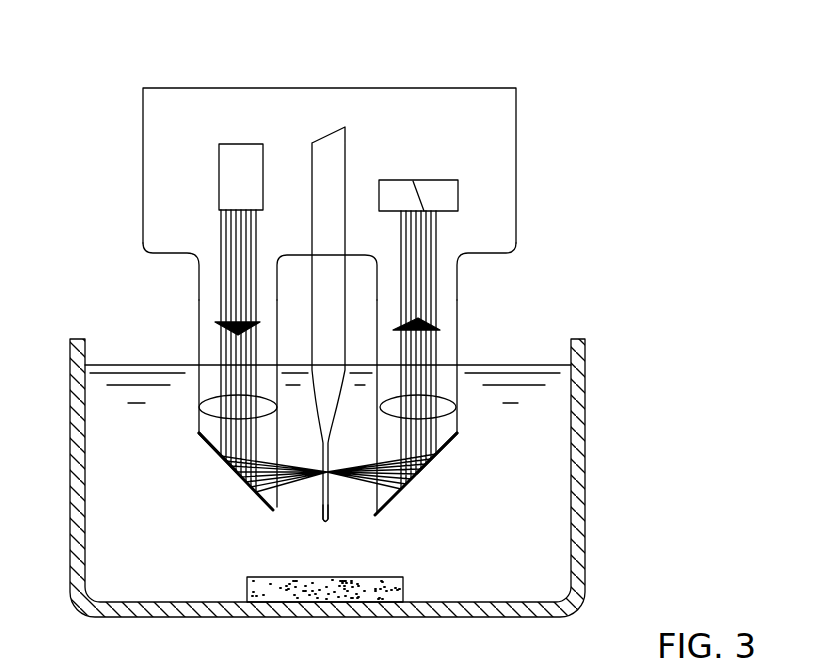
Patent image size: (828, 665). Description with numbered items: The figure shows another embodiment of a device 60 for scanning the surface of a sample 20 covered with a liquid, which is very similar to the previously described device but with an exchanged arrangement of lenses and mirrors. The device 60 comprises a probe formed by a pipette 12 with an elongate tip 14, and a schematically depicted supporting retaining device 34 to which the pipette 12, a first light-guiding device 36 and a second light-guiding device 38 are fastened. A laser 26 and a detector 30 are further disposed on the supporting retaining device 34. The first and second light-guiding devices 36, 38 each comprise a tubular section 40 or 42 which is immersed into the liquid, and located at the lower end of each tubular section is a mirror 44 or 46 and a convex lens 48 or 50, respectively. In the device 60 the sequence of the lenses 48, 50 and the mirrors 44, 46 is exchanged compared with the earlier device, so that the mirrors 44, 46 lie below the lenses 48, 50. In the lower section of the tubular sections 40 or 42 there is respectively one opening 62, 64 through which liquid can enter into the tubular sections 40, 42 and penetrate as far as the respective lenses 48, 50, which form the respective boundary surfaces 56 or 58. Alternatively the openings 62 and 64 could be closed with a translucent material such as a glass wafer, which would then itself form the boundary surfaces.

The pipette 12 is at (340, 160).
The elongate tip 14 is at (330, 520).
The sample 20 is at (405, 590).
The laser 26 is at (219, 172).
The detector 30 is at (425, 180).
The supporting retaining device 34 is at (516, 145).
The first light-guiding device 36 is at (198, 287).
The second light-guiding device 38 is at (460, 290).
The tubular section 40 is at (199, 337).
The tubular section 42 is at (458, 352).
The mirror 44 is at (248, 486).
The mirror 46 is at (406, 486).
The convex lens 48 is at (212, 418).
The convex lens 50 is at (455, 412).
The boundary surface 56 is at (210, 435).
The boundary surface 58 is at (456, 436).
The device 60 is at (350, 78).
The opening 62 is at (275, 452).
The opening 64 is at (372, 455).